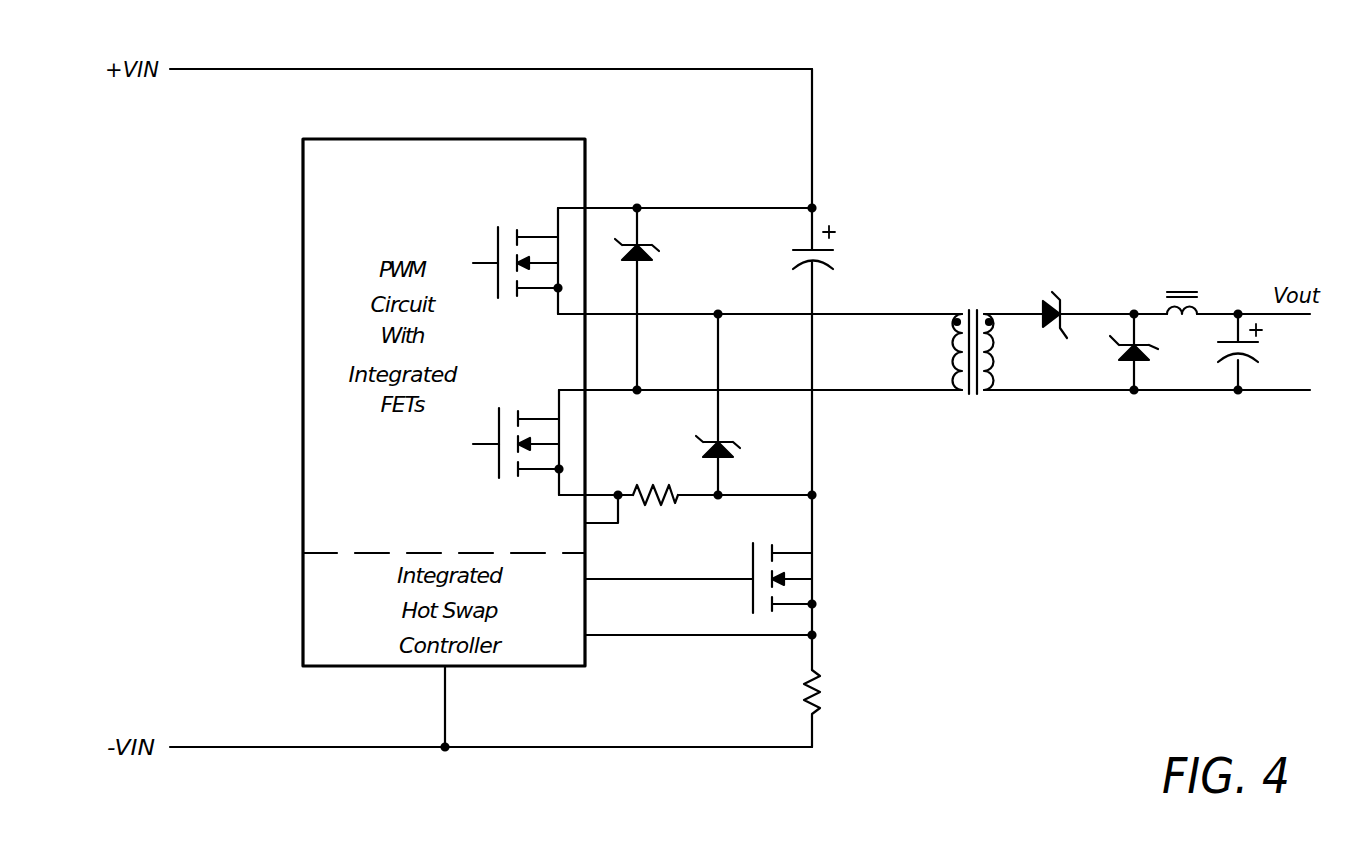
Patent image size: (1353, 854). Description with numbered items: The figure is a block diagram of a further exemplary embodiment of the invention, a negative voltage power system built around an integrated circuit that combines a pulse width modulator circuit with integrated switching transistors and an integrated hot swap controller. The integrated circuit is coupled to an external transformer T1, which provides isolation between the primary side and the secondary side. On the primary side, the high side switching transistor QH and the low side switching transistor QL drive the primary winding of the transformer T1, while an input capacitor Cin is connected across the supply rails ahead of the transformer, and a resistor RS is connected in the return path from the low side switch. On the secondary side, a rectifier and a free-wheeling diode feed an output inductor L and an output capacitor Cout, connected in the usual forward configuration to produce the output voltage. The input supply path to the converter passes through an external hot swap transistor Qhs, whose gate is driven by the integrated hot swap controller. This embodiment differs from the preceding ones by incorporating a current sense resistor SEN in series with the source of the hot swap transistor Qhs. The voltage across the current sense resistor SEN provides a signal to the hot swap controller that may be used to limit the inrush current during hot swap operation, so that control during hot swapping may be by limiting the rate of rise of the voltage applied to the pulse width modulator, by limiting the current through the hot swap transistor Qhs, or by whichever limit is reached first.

The high-side integrated FET QH is at (517, 253).
The low-side integrated FET QL is at (518, 435).
The sense resistor RS is at (655, 481).
The input capacitor Cin is at (840, 249).
The hot swap transistor Qhs is at (910, 560).
The current sense resistor SEN is at (782, 693).
The transformer T1 is at (973, 337).
The output inductor L is at (1182, 290).
The output capacitor Cout is at (1269, 352).